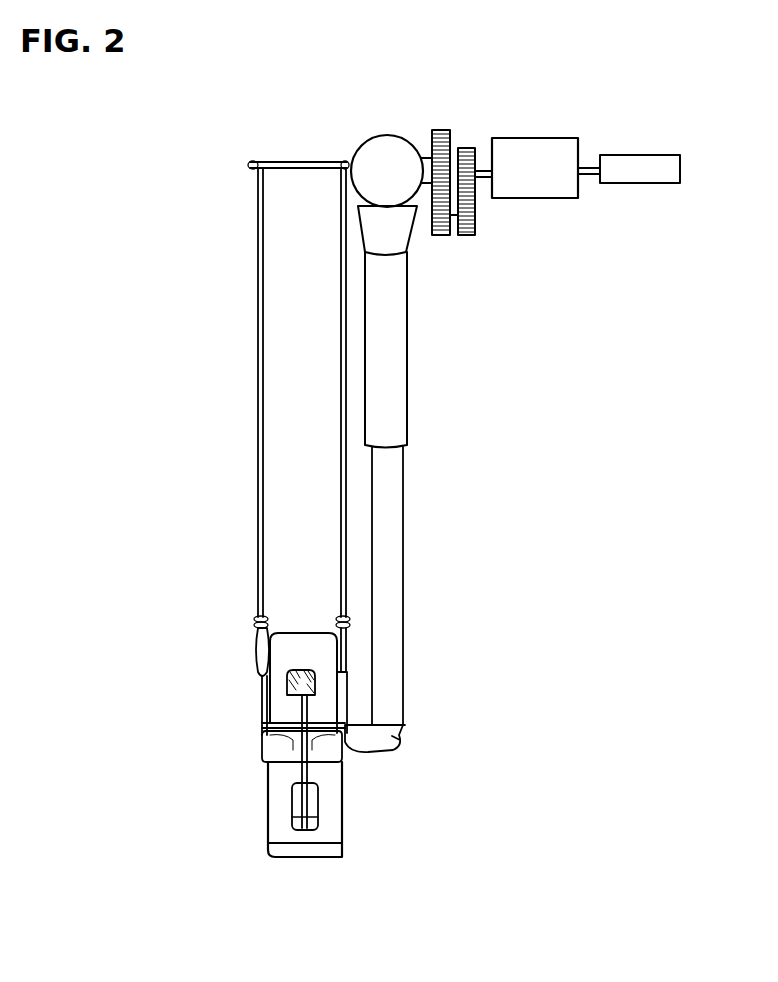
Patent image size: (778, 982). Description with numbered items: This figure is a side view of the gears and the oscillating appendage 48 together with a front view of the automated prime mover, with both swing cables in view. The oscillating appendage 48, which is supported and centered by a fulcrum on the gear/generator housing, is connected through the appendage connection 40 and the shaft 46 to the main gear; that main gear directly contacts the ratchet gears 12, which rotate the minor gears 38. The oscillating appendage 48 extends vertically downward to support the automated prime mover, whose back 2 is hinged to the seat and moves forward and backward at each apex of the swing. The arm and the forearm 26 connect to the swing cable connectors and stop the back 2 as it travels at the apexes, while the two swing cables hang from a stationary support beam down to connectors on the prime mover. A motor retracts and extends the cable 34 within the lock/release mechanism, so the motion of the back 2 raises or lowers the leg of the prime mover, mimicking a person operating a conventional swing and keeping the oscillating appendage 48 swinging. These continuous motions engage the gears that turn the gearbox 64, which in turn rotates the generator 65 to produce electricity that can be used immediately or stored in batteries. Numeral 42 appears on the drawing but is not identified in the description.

The back 2 is at (290, 637).
The ratchet gears 12 is at (443, 237).
The forearm 26 is at (257, 650).
The cable 34 is at (275, 776).
The minor gears 38 is at (470, 147).
The appendage connection 40 is at (390, 147).
The cords 42 is at (262, 427).
The shaft 46 is at (427, 152).
The oscillating appendage 48 is at (403, 410).
The gearbox 64 is at (518, 208).
The generator 65 is at (644, 160).